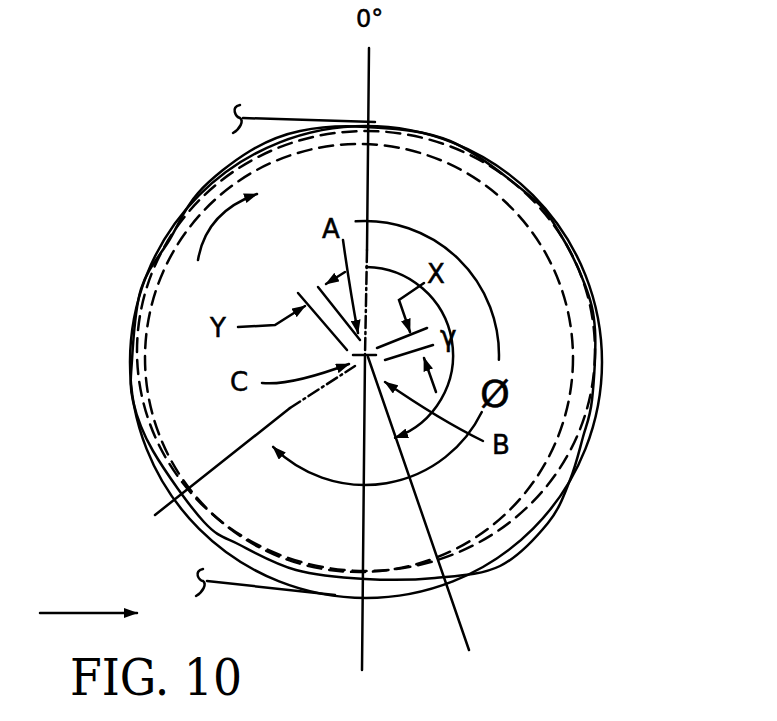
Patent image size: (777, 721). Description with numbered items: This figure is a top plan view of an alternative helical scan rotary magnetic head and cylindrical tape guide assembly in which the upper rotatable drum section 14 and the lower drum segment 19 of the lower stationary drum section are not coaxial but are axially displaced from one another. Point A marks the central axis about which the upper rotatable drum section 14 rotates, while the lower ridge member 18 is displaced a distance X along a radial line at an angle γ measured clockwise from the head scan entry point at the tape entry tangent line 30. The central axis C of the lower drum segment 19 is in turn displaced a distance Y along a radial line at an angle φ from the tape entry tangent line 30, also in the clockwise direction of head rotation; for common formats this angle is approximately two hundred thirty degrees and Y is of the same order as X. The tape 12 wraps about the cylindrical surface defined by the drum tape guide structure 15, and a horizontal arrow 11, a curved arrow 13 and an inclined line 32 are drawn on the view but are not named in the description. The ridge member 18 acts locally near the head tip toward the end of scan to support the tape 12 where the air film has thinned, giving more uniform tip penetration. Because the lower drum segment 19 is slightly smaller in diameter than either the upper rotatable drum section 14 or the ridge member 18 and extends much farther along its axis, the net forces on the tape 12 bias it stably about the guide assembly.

The flow direction arrow 11 is at (74, 606).
The tape 12 is at (261, 118).
The rotation direction 13 is at (224, 228).
The upper rotatable drum section 14 is at (134, 288).
The drum tape guide structure 15 is at (535, 164).
The ridge member 18 is at (171, 230).
The lower drum segment 19 is at (141, 351).
The tape entry tangent line 30 is at (375, 121).
The tilted reference line 32 is at (326, 614).